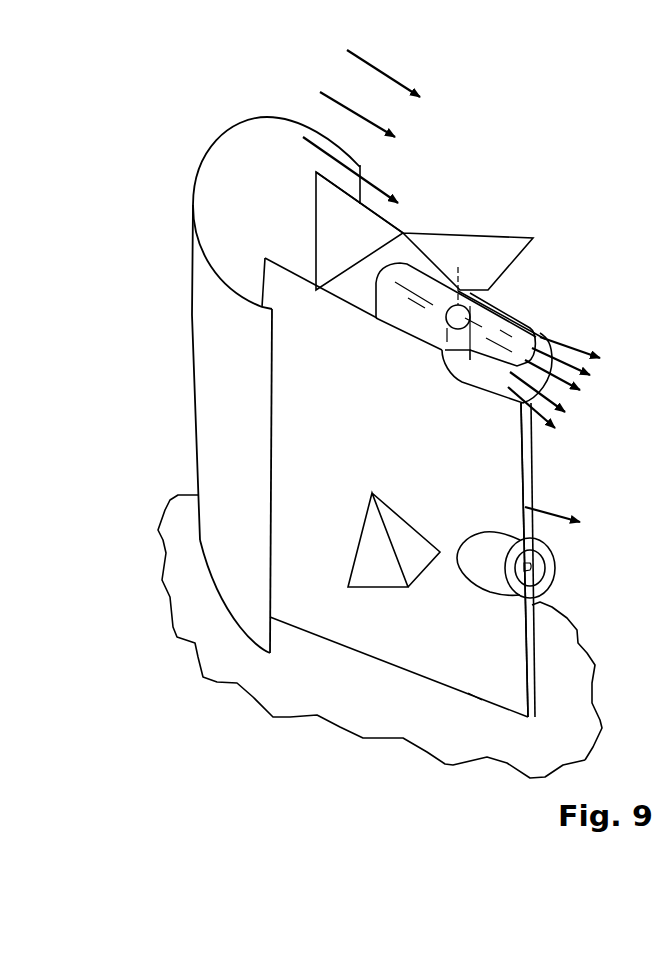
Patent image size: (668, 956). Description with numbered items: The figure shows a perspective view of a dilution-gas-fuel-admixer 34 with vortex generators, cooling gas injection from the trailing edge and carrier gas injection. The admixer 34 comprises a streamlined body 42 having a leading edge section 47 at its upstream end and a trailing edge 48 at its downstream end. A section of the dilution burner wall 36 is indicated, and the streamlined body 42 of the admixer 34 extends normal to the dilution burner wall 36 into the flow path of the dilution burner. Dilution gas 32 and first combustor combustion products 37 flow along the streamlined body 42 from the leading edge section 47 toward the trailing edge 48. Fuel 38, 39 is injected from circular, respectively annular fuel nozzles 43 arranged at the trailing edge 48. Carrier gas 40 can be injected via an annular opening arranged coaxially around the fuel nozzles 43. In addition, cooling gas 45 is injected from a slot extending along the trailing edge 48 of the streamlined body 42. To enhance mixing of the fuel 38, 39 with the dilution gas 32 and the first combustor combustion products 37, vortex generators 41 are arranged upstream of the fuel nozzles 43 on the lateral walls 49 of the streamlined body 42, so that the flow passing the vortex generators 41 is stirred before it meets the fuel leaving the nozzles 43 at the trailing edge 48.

The dilution-gas-fuel-admixer 34 is at (605, 135).
The dilution gas 32 is at (365, 170).
The dilution burner wall 36 is at (378, 718).
The first combustor combustion products 37 is at (358, 90).
The fuel 38 is at (566, 397).
The fuel 39 is at (566, 391).
The carrier gas 40 is at (573, 402).
The vortex generators 41 is at (385, 562).
The streamlined body 42 is at (398, 487).
The fuel nozzles 43 is at (533, 567).
The cooling gas 45 is at (563, 506).
The leading edge section 47 is at (212, 392).
The trailing edge 48 is at (532, 647).
The lateral walls 49 is at (408, 238).